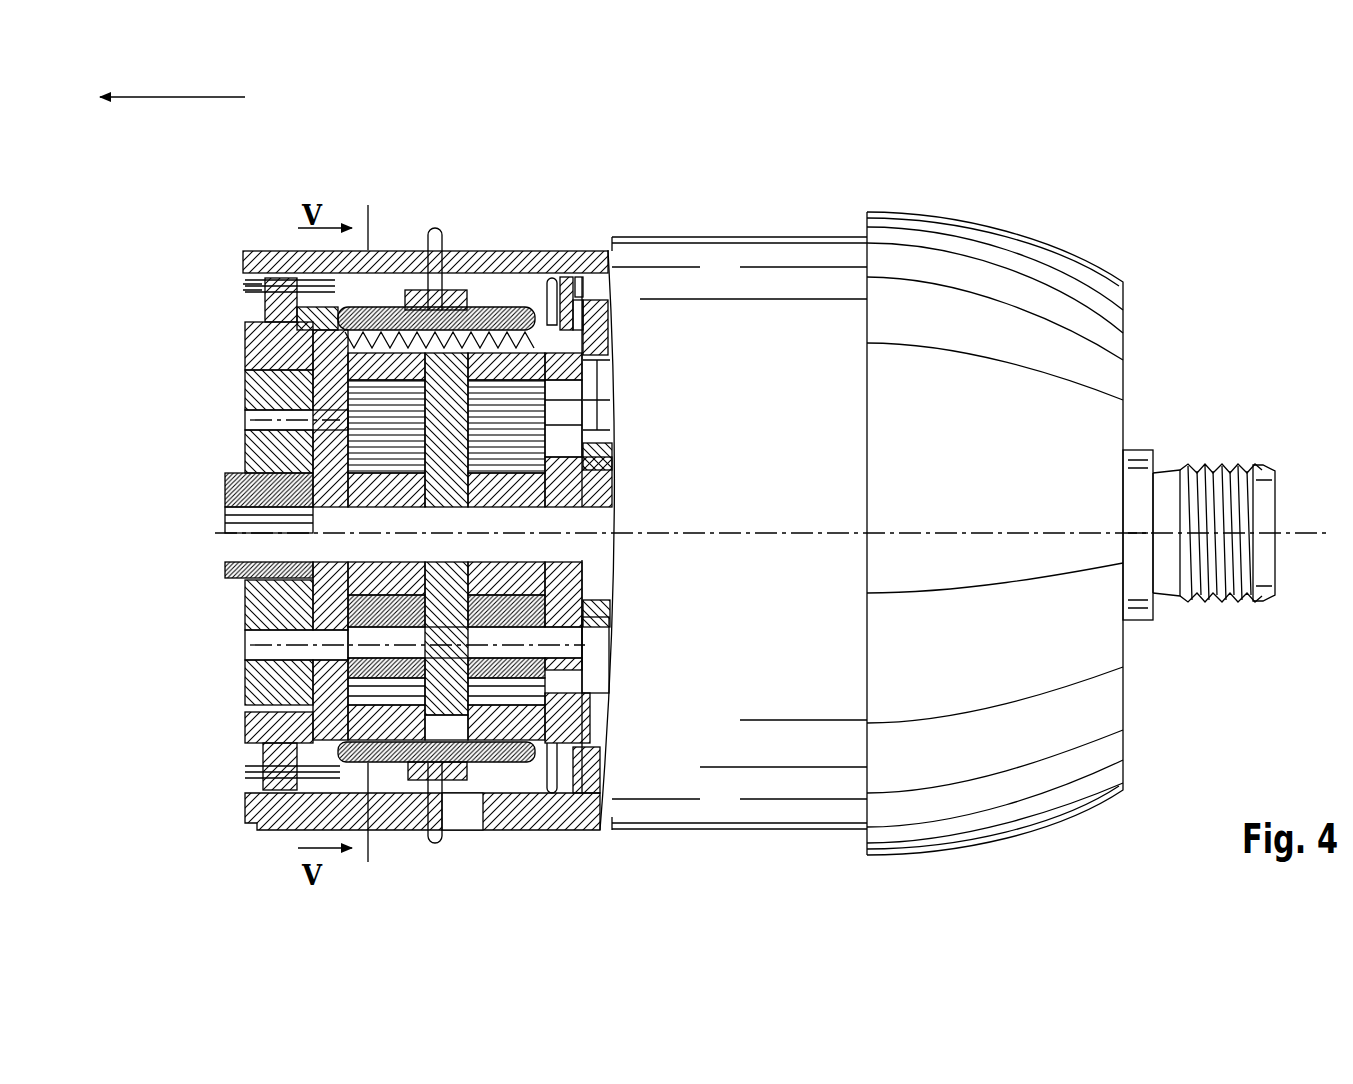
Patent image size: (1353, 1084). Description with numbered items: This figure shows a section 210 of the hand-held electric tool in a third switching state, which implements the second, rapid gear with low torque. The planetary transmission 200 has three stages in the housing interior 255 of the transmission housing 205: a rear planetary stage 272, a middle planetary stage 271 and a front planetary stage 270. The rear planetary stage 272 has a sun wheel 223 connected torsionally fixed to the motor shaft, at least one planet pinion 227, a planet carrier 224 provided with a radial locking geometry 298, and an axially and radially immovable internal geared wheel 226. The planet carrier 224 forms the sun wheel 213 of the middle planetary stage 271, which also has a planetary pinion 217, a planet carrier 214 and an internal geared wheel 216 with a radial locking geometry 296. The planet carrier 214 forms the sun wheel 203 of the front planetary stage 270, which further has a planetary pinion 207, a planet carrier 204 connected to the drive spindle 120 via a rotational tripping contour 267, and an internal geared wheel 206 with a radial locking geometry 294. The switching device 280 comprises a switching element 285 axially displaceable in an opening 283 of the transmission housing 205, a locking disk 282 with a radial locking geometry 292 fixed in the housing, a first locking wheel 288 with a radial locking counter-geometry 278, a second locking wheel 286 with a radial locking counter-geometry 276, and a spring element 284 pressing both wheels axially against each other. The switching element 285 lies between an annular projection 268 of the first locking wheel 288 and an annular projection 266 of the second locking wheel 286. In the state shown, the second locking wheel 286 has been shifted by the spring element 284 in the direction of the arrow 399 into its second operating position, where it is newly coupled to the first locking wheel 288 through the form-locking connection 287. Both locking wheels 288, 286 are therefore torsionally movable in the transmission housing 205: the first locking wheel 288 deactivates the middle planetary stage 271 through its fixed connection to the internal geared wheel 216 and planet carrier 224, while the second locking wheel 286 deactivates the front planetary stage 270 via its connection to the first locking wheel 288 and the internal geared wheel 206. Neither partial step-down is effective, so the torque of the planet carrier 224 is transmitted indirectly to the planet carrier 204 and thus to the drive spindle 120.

The arrow 399 is at (155, 98).
The planetary transmission 200 is at (338, 182).
The switching element 285 is at (424, 292).
The form-locking axial connection 287 is at (440, 230).
The annular projection 268 is at (405, 300).
The opening 283 is at (445, 308).
The spring element 284 is at (336, 343).
The first locking wheel 288 is at (380, 318).
The annular projection 266 is at (487, 290).
The switching device 280 is at (500, 316).
The locking disk 282 is at (597, 280).
The transmission housing 205 is at (780, 290).
The section 210 is at (1292, 203).
The housing interior 255 is at (238, 291).
The radial locking geometry 298 is at (265, 298).
The internal geared wheel 226 is at (277, 316).
The radial locking counter-geometry 278 is at (340, 360).
The planet carrier 224 is at (295, 386).
The internal geared wheel 216 is at (340, 420).
The radial locking geometry 296 is at (410, 372).
The sun wheel 223 is at (240, 492).
The middle planetary stage 271 is at (417, 544).
The sun wheel 213 is at (393, 575).
The planet pinion 227 is at (280, 690).
The planetary pinion 217 is at (320, 707).
The rear planetary stage 272 is at (238, 752).
The second locking wheel 286 is at (445, 790).
The internal geared wheel 206 is at (478, 765).
The radial locking geometry 292 is at (556, 295).
The radial locking geometry 294 is at (575, 310).
The front planetary stage 270 is at (555, 401).
The radial locking counter-geometry 276 is at (590, 452).
The rotational tripping contour 267 is at (619, 467).
The sun wheel 203 is at (520, 577).
The planet carrier 204 is at (540, 605).
The drive spindle 120 is at (1222, 490).
The planetary pinion 207 is at (447, 697).
The planet carrier 214 is at (533, 730).